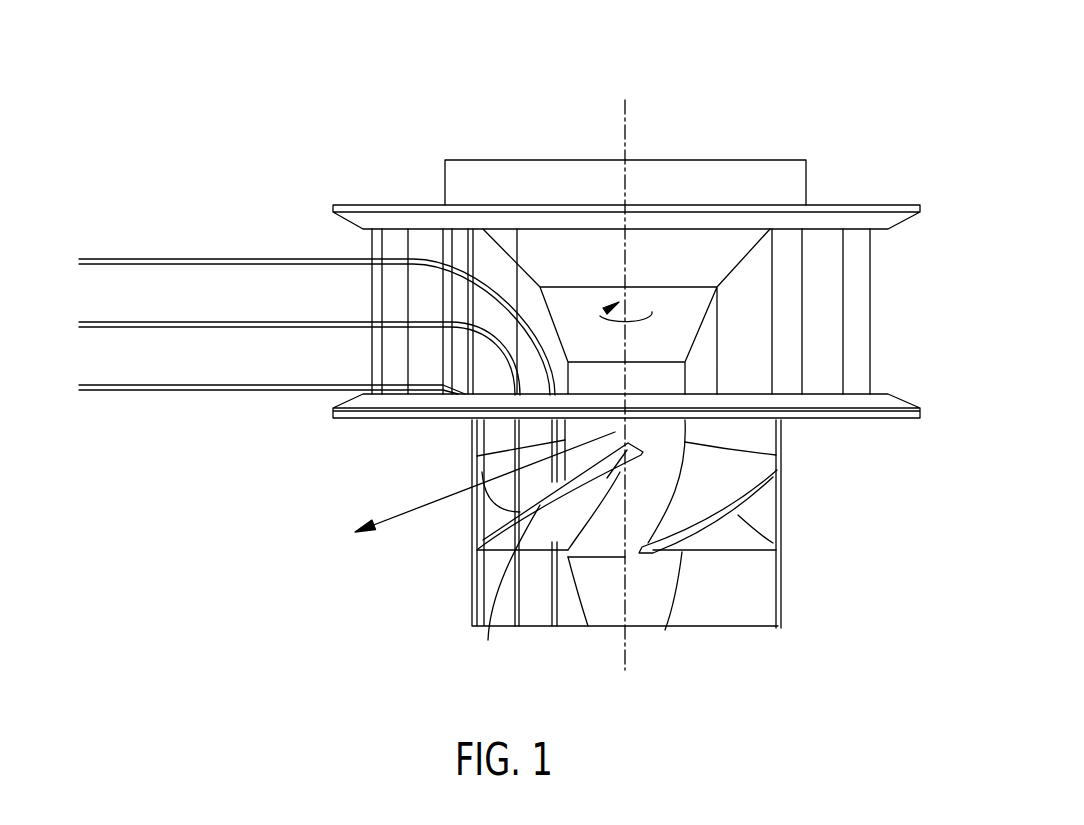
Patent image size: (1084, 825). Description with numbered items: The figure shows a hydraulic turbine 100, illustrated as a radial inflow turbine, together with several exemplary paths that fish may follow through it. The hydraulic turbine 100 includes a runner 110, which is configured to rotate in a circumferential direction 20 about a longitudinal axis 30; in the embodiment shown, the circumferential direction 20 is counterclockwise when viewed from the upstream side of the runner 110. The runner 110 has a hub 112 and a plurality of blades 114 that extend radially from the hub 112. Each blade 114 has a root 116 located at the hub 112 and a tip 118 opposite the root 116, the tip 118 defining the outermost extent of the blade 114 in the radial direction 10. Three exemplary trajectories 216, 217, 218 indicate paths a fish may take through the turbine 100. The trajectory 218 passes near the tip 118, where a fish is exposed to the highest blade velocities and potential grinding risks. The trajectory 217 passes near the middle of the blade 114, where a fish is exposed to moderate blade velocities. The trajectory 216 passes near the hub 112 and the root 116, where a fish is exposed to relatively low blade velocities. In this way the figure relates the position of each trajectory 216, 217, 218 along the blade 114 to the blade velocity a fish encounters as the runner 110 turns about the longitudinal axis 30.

The hydraulic turbine 100 is at (810, 110).
The radial direction 10 is at (410, 508).
The circumferential direction 20 is at (643, 310).
The longitudinal axis 30 is at (633, 137).
The runner 110 is at (767, 508).
The hub 112 is at (657, 590).
The blade 114 is at (710, 510).
The root 116 is at (588, 567).
The tip 118 is at (535, 545).
The trajectory 216 is at (225, 259).
The trajectory 217 is at (173, 322).
The trajectory 218 is at (217, 392).